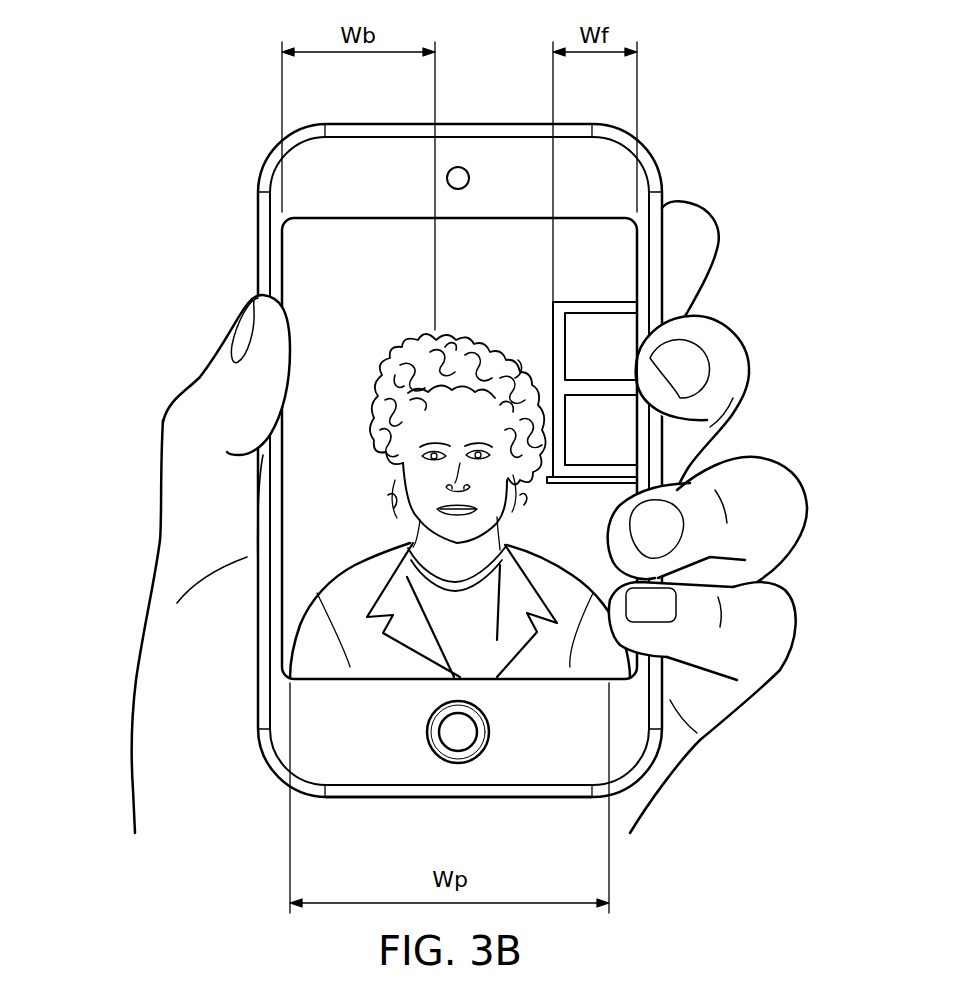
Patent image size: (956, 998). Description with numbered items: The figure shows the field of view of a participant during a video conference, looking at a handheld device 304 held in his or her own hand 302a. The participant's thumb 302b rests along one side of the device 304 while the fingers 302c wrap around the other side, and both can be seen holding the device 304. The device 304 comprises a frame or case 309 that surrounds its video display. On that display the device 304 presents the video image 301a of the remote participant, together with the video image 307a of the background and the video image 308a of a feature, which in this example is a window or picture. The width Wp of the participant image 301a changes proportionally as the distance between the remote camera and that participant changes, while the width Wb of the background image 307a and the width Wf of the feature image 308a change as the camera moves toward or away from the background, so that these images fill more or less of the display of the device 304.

The device 304 is at (250, 236).
The frame or case 309 is at (397, 790).
The video image of background 307a is at (328, 317).
The video image of feature 308a is at (578, 488).
The video image of participant 301a is at (352, 568).
The hand 302a is at (128, 681).
The thumb 302b is at (160, 428).
The fingers 302c is at (750, 373).